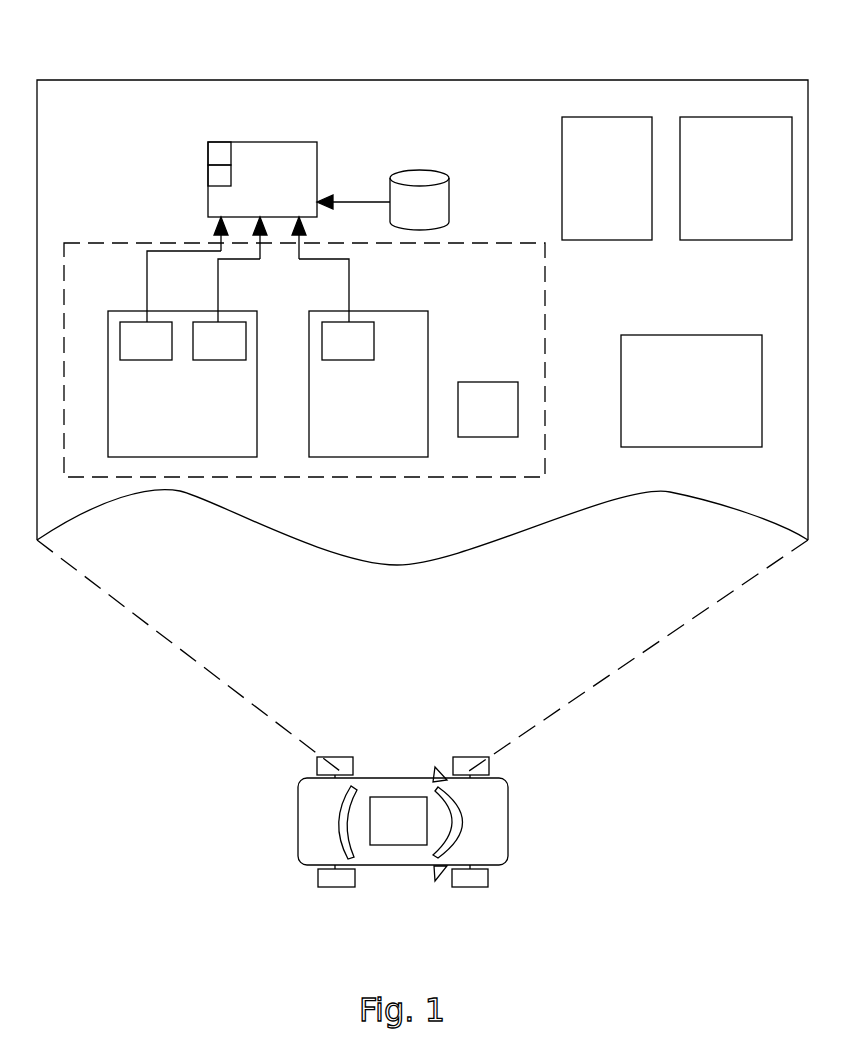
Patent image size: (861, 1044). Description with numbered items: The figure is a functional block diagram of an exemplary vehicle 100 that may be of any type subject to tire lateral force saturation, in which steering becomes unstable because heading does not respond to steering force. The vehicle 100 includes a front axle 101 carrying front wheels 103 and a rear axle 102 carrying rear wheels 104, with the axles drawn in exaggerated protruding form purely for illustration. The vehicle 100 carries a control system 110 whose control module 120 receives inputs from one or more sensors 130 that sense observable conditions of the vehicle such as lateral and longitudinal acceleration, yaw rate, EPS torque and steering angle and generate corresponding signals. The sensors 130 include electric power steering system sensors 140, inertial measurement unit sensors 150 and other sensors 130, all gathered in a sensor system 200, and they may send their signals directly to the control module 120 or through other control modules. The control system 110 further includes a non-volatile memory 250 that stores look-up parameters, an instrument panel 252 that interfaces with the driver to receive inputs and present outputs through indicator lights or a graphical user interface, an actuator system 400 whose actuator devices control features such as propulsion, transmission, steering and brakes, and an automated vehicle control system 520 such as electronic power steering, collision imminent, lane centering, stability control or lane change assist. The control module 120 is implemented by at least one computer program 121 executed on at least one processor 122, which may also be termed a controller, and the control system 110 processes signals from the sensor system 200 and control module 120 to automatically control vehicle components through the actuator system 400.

The vehicle 100 is at (386, 787).
The front axle 101 is at (472, 887).
The rear axle 102 is at (333, 887).
The front wheels 103 is at (464, 757).
The rear wheels 104 is at (345, 758).
The control system 110 is at (649, 468).
The control module 120 is at (262, 179).
The computer program 121 is at (215, 150).
The processor 122 is at (211, 177).
The sensors 130 is at (319, 379).
The electric power steering system sensors 140 is at (128, 311).
The inertial measurement unit sensors 150 is at (428, 345).
The sensor system 200 is at (507, 477).
The non-volatile memory 250 is at (438, 196).
The instrument panel 252 is at (610, 240).
The actuator system 400 is at (702, 117).
The automated vehicle control system 520 is at (723, 447).